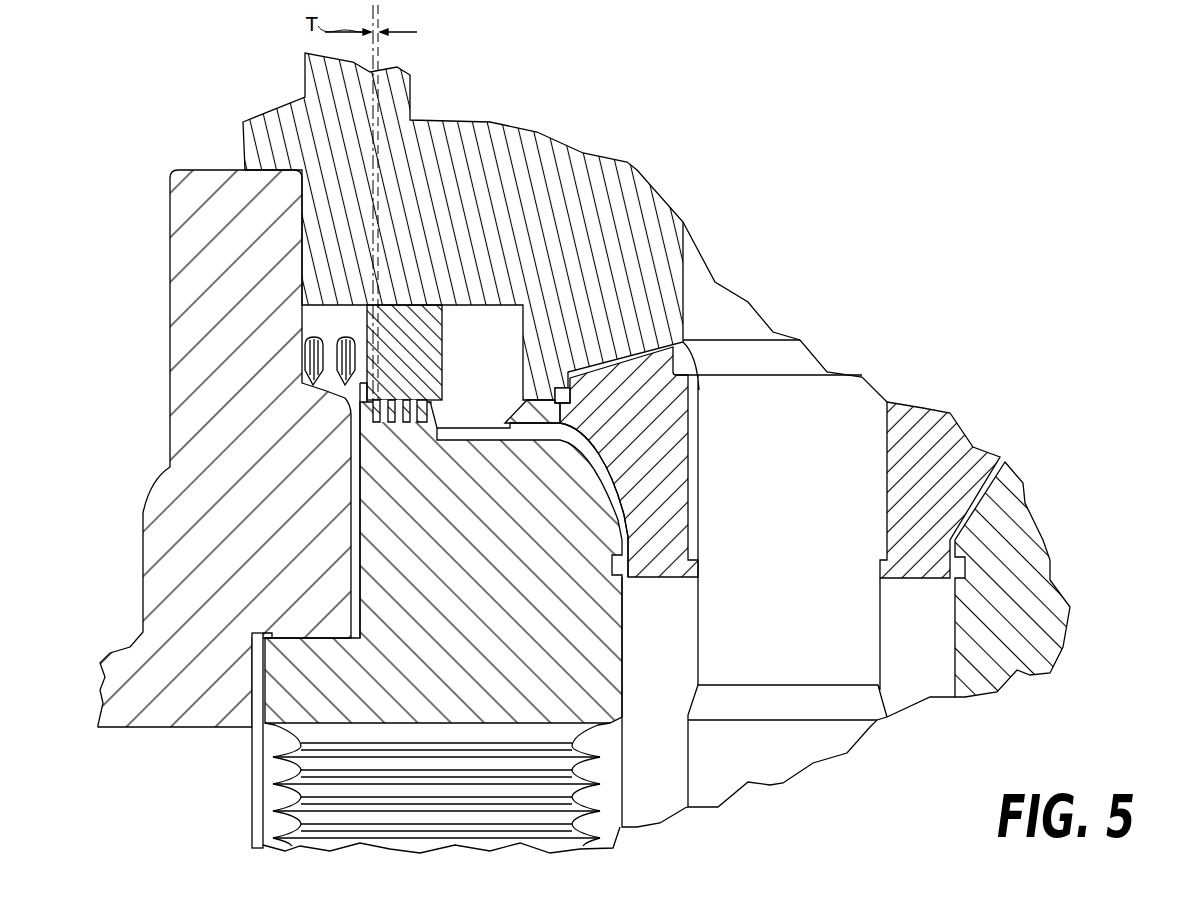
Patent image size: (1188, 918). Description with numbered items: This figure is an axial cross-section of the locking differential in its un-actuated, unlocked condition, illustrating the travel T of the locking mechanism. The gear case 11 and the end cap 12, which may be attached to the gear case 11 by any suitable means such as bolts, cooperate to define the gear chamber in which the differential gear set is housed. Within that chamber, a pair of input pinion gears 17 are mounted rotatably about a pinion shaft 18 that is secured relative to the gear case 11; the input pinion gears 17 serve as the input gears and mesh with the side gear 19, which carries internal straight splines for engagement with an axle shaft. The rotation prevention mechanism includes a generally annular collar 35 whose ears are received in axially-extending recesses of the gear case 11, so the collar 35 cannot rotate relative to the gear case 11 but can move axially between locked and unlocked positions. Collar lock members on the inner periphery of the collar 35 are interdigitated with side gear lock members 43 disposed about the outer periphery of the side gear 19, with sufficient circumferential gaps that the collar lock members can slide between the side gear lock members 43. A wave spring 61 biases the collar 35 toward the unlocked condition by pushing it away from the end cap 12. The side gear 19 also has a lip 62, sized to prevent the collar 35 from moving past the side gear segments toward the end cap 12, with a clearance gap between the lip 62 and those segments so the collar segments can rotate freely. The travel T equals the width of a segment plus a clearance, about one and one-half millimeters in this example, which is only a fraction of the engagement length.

The gear case 11 is at (537, 186).
The end cap 12 is at (190, 305).
The input pinion gear 17 is at (921, 453).
The pinion shaft 18 is at (822, 417).
The side gear 19 is at (565, 660).
The collar 35 is at (388, 307).
The side gear lock member 43 is at (397, 420).
The wave spring 61 is at (308, 385).
The lip 62 is at (358, 397).